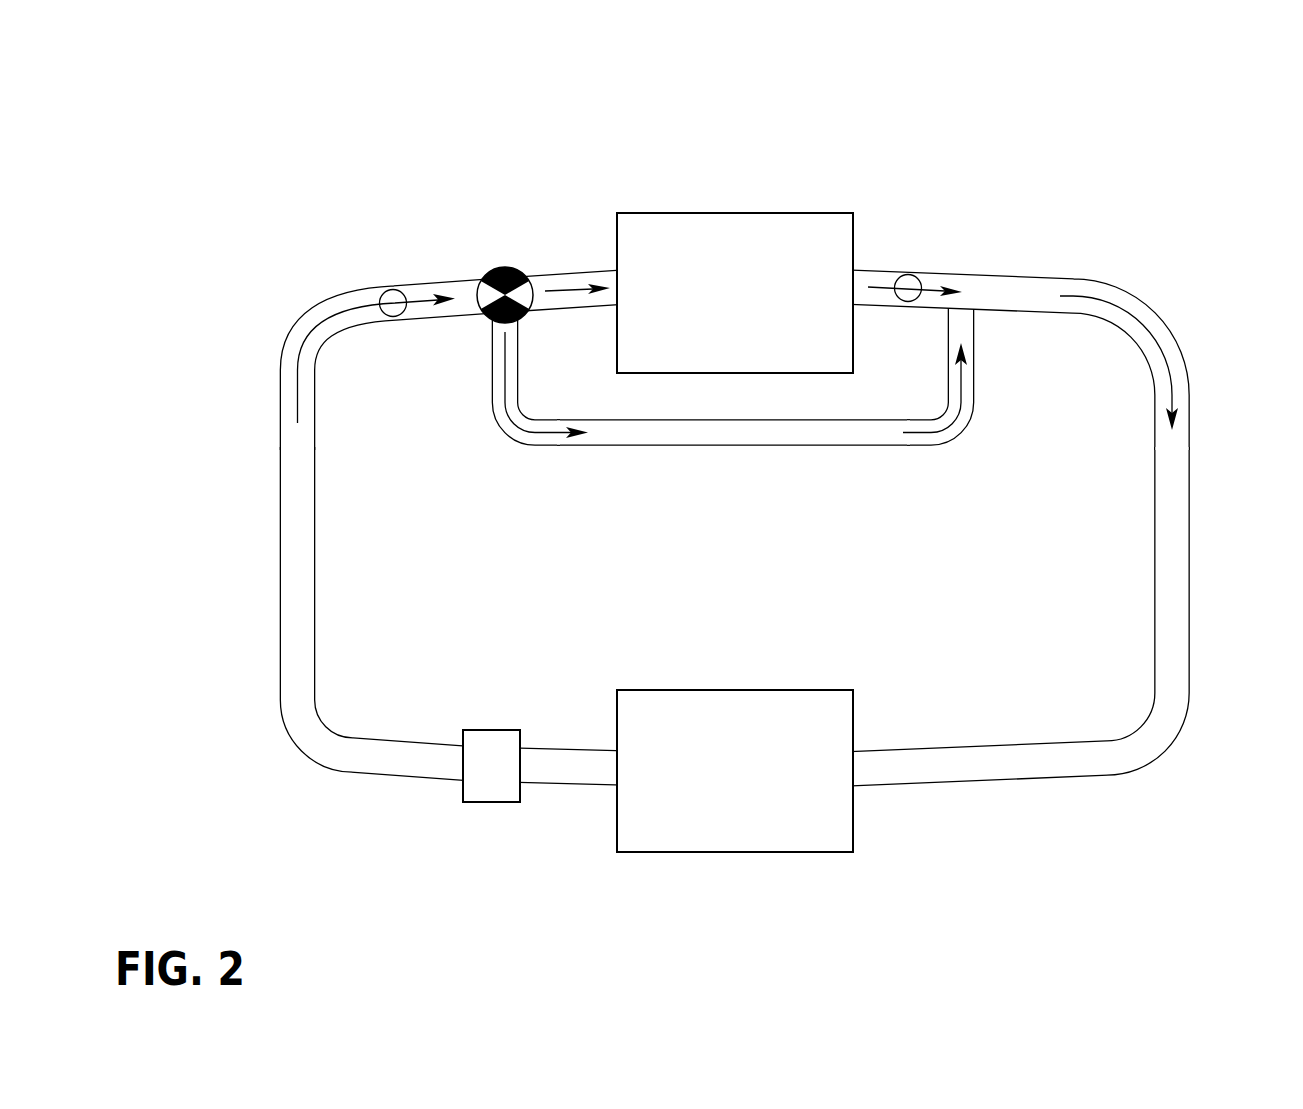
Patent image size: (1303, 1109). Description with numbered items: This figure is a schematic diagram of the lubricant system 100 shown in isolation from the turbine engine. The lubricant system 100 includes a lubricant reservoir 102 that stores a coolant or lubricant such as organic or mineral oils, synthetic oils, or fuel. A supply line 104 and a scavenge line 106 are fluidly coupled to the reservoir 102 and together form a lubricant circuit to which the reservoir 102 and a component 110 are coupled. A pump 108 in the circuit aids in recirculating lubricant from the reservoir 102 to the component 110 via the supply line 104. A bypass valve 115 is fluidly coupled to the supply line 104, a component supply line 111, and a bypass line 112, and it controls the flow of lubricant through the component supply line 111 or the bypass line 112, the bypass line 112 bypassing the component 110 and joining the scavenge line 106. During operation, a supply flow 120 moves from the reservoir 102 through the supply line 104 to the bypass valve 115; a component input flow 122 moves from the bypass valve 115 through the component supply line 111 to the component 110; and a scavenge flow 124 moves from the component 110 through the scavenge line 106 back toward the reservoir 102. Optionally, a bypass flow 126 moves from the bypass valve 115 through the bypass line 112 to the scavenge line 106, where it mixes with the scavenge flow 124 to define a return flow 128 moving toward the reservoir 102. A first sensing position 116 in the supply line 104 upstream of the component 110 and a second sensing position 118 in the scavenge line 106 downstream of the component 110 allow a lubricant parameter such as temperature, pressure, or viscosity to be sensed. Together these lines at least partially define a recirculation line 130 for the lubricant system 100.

The lubricant system 100 is at (1229, 94).
The lubricant reservoir 102 is at (763, 771).
The supply line 104 is at (302, 571).
The scavenge line 106 is at (1170, 538).
The pump 108 is at (488, 803).
The component 110 is at (754, 303).
The component supply line 111 is at (557, 273).
The bypass line 112 is at (718, 429).
The bypass valve 115 is at (497, 268).
The first sensing position 116 is at (403, 313).
The second sensing position 118 is at (899, 298).
The supply flow 120 is at (320, 323).
The component input flow 122 is at (578, 298).
The scavenge flow 124 is at (880, 285).
The bypass flow 126 is at (515, 439).
The return flow 128 is at (1161, 331).
The recirculation line 130 is at (337, 683).